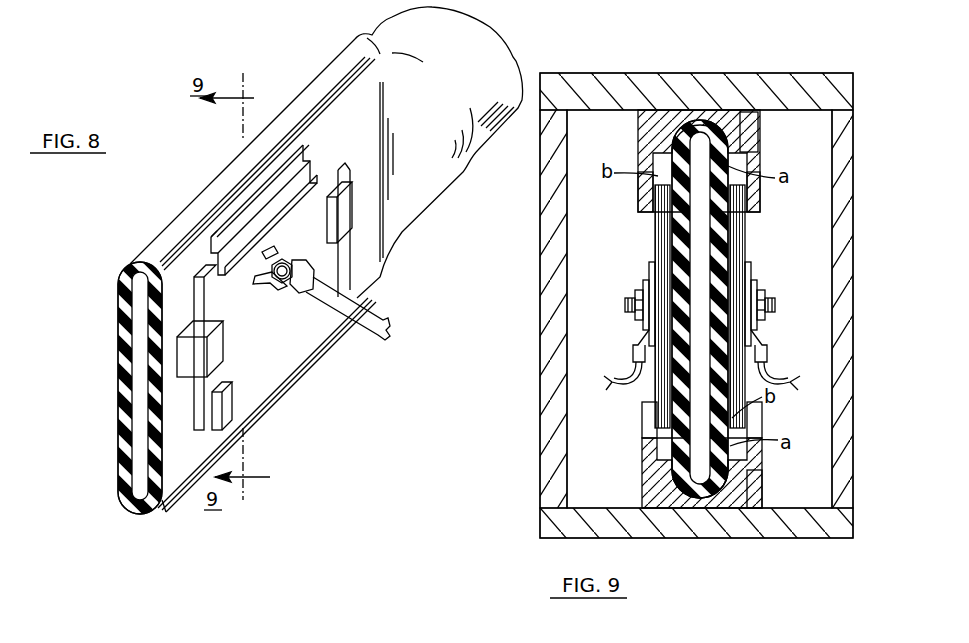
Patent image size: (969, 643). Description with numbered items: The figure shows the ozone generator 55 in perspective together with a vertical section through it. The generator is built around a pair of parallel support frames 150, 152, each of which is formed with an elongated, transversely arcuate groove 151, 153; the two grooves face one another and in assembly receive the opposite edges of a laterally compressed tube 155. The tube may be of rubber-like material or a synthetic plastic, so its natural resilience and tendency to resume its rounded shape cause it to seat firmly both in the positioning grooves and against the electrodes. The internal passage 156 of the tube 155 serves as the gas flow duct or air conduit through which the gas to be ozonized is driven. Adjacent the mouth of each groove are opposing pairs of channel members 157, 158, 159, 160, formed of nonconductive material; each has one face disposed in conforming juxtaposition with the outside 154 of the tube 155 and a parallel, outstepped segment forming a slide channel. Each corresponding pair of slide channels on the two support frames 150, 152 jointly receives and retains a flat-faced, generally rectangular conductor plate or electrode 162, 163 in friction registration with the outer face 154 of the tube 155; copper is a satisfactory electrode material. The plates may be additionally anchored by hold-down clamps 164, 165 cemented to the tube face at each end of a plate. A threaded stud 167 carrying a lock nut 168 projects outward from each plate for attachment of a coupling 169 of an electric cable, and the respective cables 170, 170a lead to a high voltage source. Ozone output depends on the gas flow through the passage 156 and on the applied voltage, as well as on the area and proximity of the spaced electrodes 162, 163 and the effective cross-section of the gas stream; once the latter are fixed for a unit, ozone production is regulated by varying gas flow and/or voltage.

In FIG. 9, the ozone generator 55 is at (858, 296).
In FIG. 9, the support frame 150 is at (755, 132).
In FIG. 9, the groove 151 is at (650, 140).
In FIG. 9, the support frame 152 is at (764, 502).
In FIG. 9, the groove 153 is at (690, 490).
In FIG. 8, the outside of the tube 154 is at (118, 363).
In FIG. 9, the outside of the tube 154 is at (672, 240).
In FIG. 8, the tube 155 is at (120, 290).
In FIG. 9, the tube 155 is at (722, 160).
In FIG. 8, the internal passage 156 is at (138, 446).
In FIG. 9, the internal passage 156 is at (700, 136).
In FIG. 9, the channel member 157 is at (646, 196).
In FIG. 8, the channel member 158 is at (243, 250).
In FIG. 9, the channel member 158 is at (757, 195).
In FIG. 9, the channel member 159 is at (648, 423).
In FIG. 8, the channel member 160 is at (298, 336).
In FIG. 9, the channel member 160 is at (757, 424).
In FIG. 9, the conductor plate 162 is at (660, 254).
In FIG. 9, the conductor plate 163 is at (736, 244).
In FIG. 8, the hold-down clamp 164 is at (214, 333).
In FIG. 8, the hold-down clamp 165 is at (343, 224).
In FIG. 9, the hold-down clamp 165 is at (757, 270).
In FIG. 8, the threaded stud 167 is at (294, 264).
In FIG. 9, the threaded stud 167 is at (772, 306).
In FIG. 8, the lock nut 168 is at (274, 288).
In FIG. 9, the lock nut 168 is at (750, 322).
In FIG. 8, the coupling 169 is at (276, 256).
In FIG. 9, the coupling 169 is at (750, 283).
In FIG. 8, the electric cable 170 is at (380, 320).
In FIG. 9, the electric cable 170 is at (770, 386).
In FIG. 9, the electric cable 170a is at (632, 381).